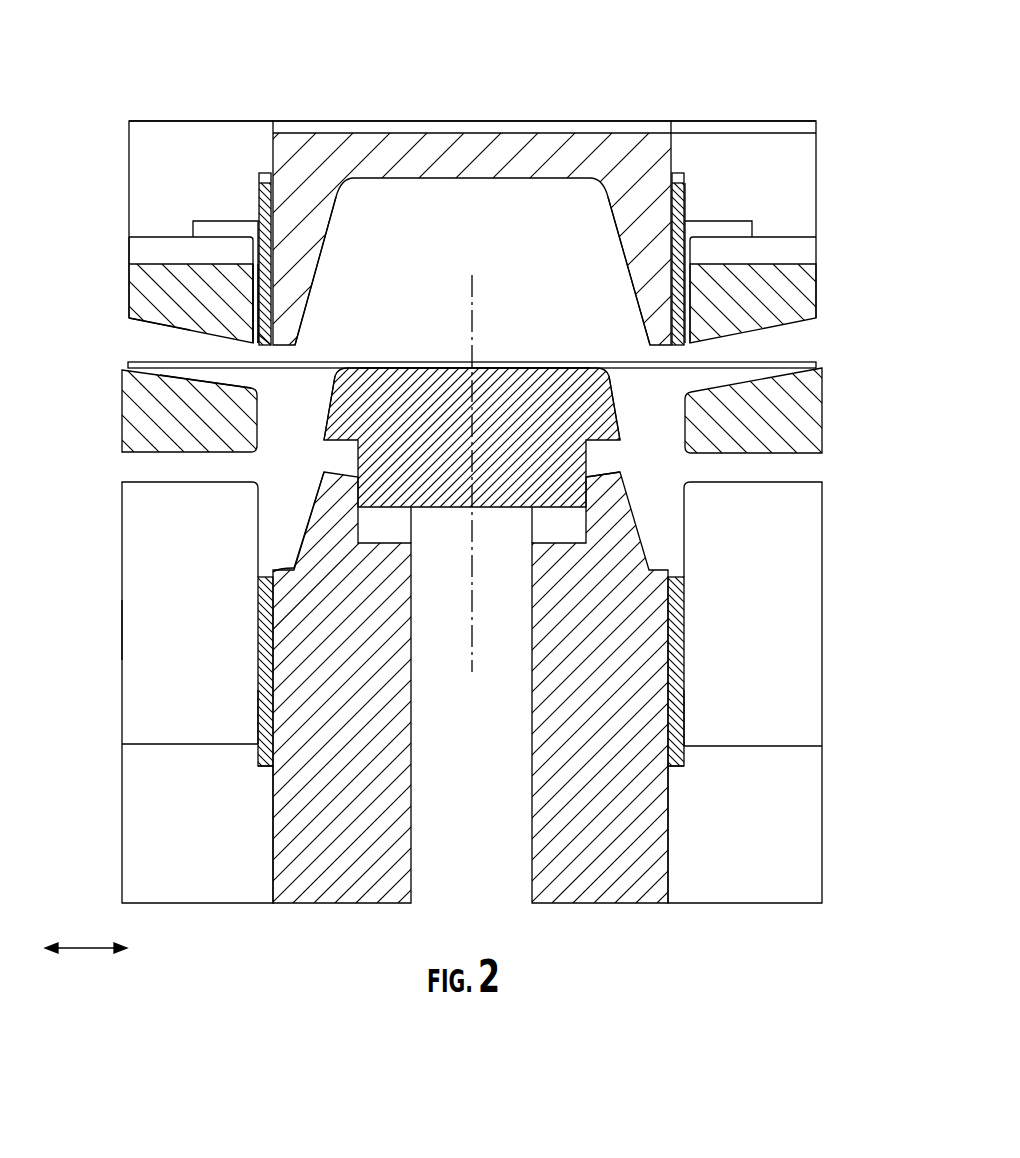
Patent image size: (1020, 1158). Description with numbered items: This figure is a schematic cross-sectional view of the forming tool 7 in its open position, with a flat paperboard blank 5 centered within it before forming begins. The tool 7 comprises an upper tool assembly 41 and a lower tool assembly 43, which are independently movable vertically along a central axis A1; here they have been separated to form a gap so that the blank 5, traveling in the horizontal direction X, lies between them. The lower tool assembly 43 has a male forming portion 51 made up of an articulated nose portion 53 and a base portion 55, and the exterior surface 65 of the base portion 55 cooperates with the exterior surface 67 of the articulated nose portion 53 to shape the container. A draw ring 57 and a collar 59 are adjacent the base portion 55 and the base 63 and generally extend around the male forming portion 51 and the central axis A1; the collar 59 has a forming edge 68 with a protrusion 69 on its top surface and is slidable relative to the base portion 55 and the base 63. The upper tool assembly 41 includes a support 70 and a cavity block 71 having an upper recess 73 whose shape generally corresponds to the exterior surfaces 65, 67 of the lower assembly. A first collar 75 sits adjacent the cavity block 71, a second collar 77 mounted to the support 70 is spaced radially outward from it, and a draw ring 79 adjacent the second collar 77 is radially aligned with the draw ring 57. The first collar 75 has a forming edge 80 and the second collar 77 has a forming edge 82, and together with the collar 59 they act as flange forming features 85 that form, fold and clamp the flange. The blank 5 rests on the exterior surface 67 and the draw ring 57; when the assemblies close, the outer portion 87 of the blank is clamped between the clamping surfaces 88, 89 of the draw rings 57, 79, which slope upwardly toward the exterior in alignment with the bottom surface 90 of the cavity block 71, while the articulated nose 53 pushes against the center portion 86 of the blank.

The forming tool 7 is at (848, 194).
The blank 5 is at (378, 362).
The upper tool assembly 41 is at (96, 247).
The lower tool assembly 43 is at (88, 632).
The male forming portion 51 is at (636, 475).
The articulated nose portion 53 is at (593, 392).
The base portion 55 is at (292, 826).
The draw ring 57 is at (143, 435).
The collar 59 is at (262, 712).
The base 63 is at (139, 697).
The exterior surface 65 is at (313, 505).
The exterior surface 67 is at (329, 408).
The forming edge 68 is at (258, 576).
The protrusion 69 is at (262, 577).
The support 70 is at (137, 141).
The cavity block 71 is at (603, 133).
The upper recess 73 is at (330, 250).
The first collar 75 is at (258, 190).
The second collar 77 is at (207, 222).
The draw ring 79 is at (139, 297).
The forming edge 80 is at (268, 330).
The forming edge 82 is at (257, 318).
The flange forming features 85 is at (690, 158).
The center portion 86 is at (436, 362).
The outer portion 87 is at (192, 362).
The clamping surface 88 is at (217, 374).
The clamping surface 89 is at (139, 322).
The bottom surface 90 is at (650, 345).
The central axis A1 is at (474, 316).
The horizontal direction X is at (90, 950).